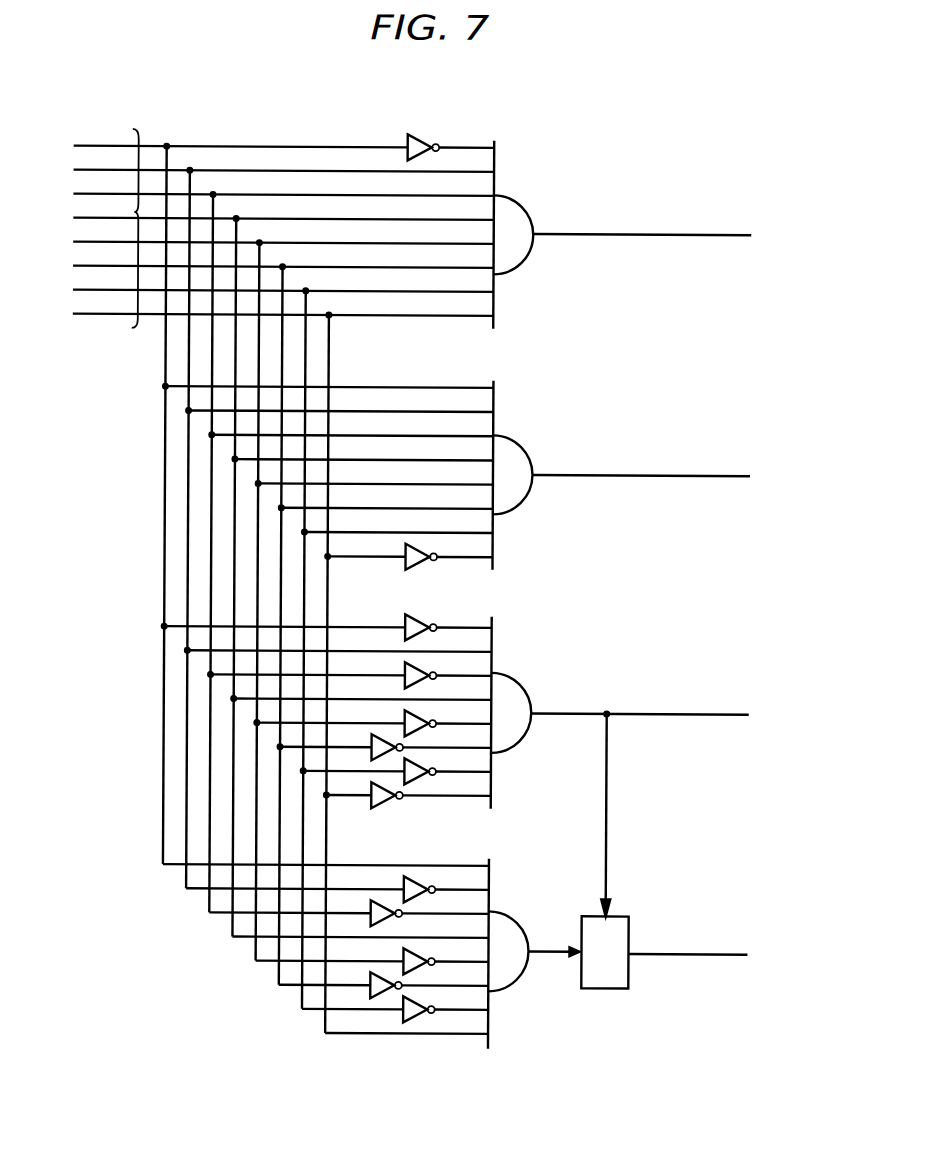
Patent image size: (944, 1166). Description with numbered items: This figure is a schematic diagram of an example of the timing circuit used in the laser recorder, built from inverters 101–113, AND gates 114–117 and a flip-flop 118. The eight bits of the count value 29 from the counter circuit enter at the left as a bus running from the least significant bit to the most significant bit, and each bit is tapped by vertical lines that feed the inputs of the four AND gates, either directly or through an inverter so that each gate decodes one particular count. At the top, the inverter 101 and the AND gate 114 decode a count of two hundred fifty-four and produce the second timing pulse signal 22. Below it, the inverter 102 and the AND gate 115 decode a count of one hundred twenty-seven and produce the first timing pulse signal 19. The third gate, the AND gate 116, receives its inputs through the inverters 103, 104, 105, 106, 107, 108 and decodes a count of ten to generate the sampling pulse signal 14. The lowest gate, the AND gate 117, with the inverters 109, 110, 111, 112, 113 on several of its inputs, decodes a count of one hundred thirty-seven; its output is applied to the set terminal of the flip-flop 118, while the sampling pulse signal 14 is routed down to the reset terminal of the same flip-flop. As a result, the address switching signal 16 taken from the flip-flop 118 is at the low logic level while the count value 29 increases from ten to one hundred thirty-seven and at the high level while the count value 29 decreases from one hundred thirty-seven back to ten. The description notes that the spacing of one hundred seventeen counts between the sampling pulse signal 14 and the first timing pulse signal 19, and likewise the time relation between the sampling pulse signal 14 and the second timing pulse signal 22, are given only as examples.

The count value 29 is at (140, 132).
The inverter 101 is at (415, 134).
The inverter 102 is at (408, 567).
The inverter 103 is at (416, 617).
The inverter 104 is at (420, 670).
The inverter 105 is at (422, 718).
The inverter 106 is at (379, 735).
The inverter 107 is at (421, 764).
The inverter 108 is at (389, 803).
The inverter 109 is at (412, 877).
The inverter 110 is at (384, 901).
The inverter 111 is at (422, 958).
The inverter 112 is at (384, 975).
The inverter 113 is at (422, 1002).
The AND gate 114 is at (511, 195).
The AND gate 115 is at (519, 442).
The AND gate 116 is at (519, 683).
The AND gate 117 is at (517, 917).
The flip-flop 118 is at (634, 921).
The second timing pulse signal 22 is at (651, 232).
The first timing pulse signal 19 is at (631, 474).
The sampling pulse signal 14 is at (688, 714).
The address switching signal 16 is at (710, 954).